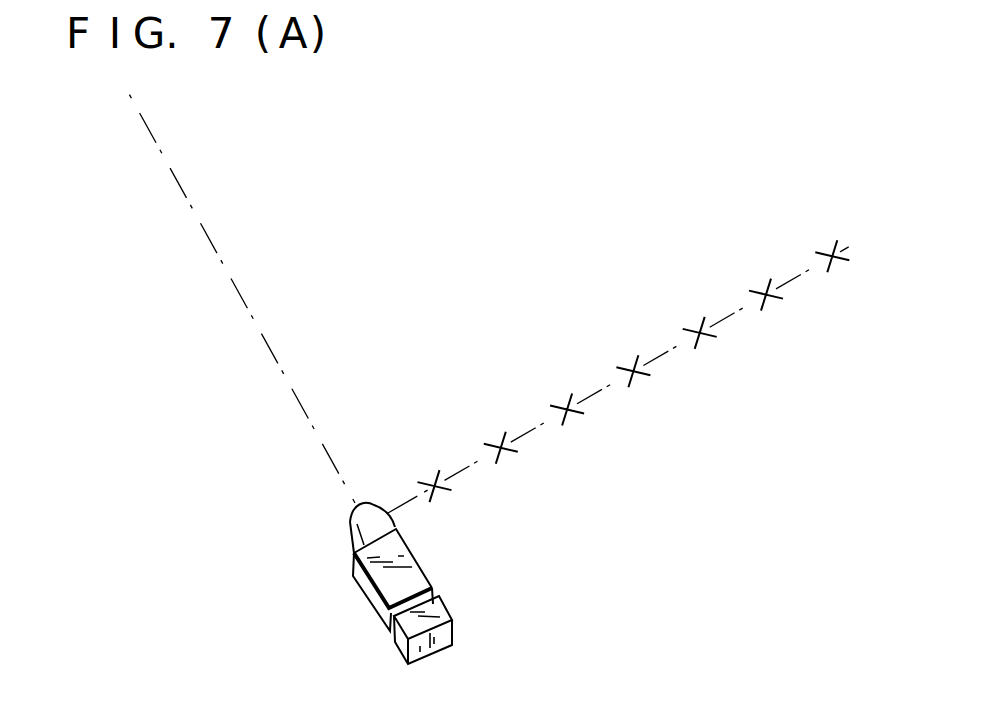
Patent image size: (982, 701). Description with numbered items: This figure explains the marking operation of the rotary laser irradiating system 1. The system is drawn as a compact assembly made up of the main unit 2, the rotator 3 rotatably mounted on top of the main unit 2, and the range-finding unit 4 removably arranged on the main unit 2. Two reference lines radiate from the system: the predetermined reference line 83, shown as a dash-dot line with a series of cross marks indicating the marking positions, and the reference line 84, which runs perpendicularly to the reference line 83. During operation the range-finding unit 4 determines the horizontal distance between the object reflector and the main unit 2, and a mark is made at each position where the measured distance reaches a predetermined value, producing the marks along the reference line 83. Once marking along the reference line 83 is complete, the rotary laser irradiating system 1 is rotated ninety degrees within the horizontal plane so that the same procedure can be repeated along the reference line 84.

The rotary laser irradiating system 1 is at (382, 653).
The main unit 2 is at (418, 563).
The rotator 3 is at (372, 519).
The range-finding unit 4 is at (448, 608).
The reference line 83 is at (655, 360).
The reference line 84 is at (168, 165).